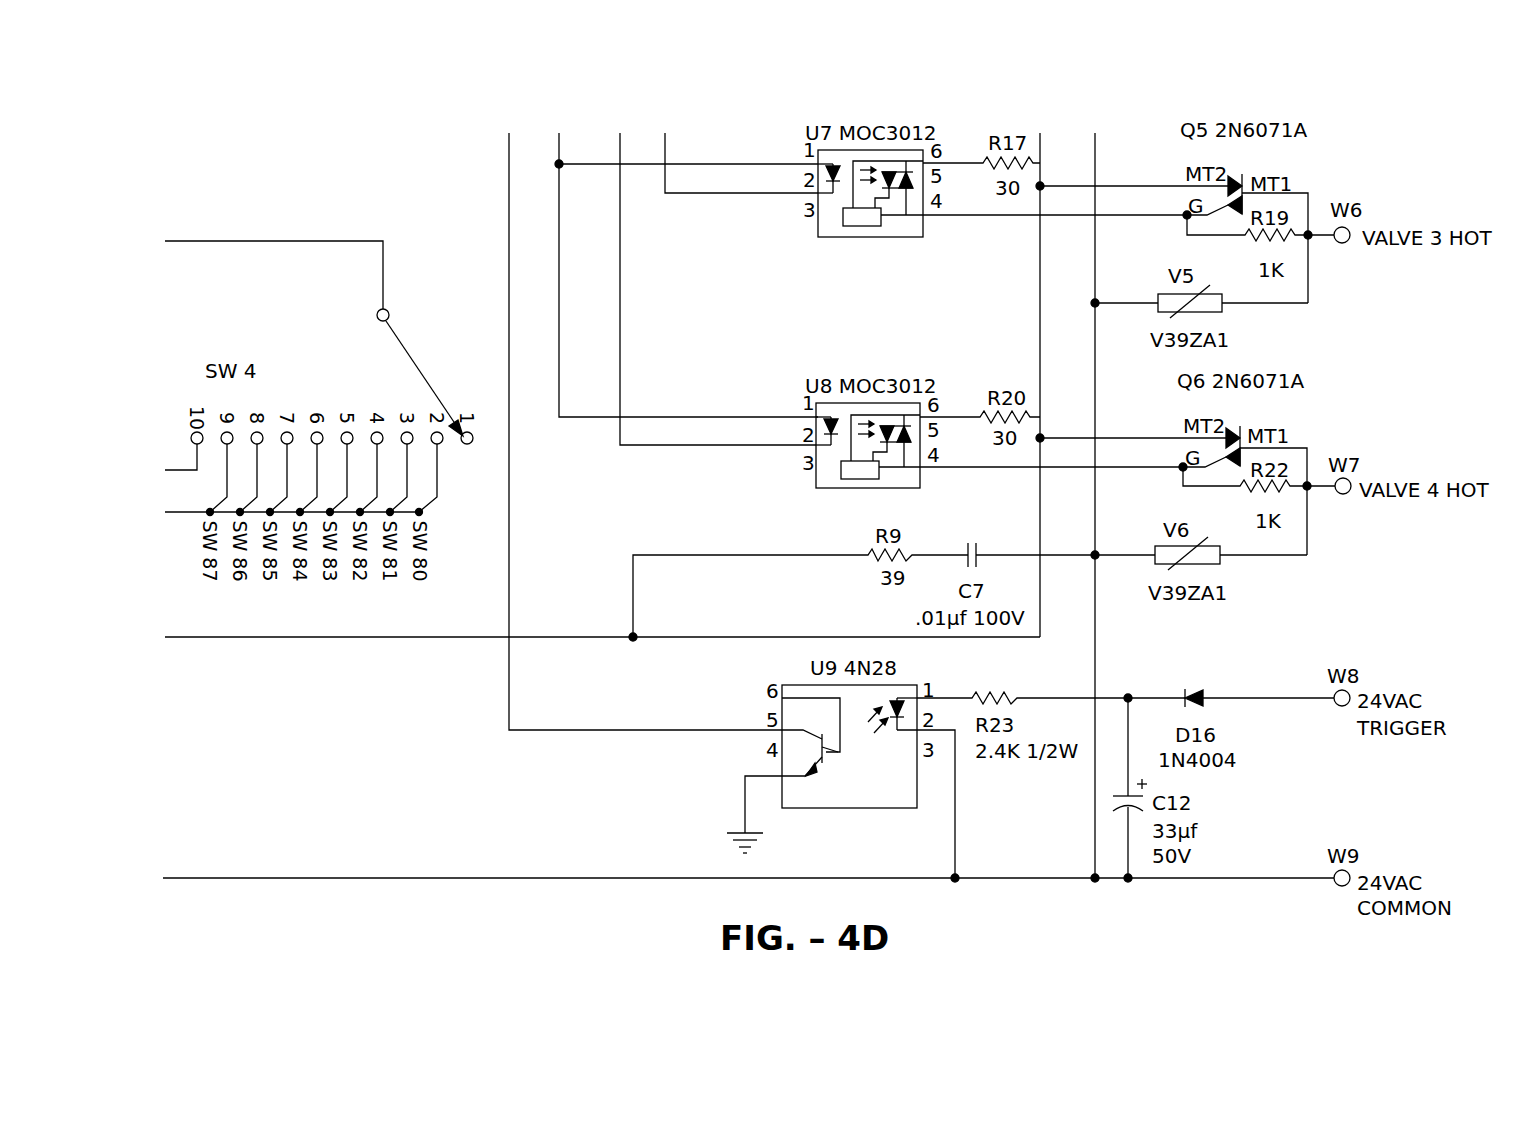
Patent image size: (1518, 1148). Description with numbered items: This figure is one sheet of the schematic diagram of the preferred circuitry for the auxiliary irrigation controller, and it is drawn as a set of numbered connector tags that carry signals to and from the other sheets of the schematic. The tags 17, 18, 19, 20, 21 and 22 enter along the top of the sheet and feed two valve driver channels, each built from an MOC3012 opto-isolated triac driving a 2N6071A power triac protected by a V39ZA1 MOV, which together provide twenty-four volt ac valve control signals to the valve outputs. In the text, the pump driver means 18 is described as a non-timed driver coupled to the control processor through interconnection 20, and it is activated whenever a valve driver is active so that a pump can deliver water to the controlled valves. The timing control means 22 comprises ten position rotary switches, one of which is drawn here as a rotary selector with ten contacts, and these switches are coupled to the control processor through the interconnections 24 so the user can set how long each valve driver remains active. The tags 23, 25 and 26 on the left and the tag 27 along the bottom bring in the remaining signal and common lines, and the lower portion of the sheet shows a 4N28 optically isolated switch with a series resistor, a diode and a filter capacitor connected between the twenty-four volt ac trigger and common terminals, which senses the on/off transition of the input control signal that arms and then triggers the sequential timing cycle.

The connector 17 is at (491, 90).
The pump driver means 18 is at (541, 90).
The connector 19 is at (602, 90).
The interconnection 20 is at (647, 90).
The connector 21 is at (1022, 90).
The timing control means 22 is at (1077, 90).
The connector 23 is at (123, 225).
The interconnections 24 is at (122, 455).
The connector 25 is at (122, 497).
The connector 26 is at (122, 620).
The connector 27 is at (118, 863).